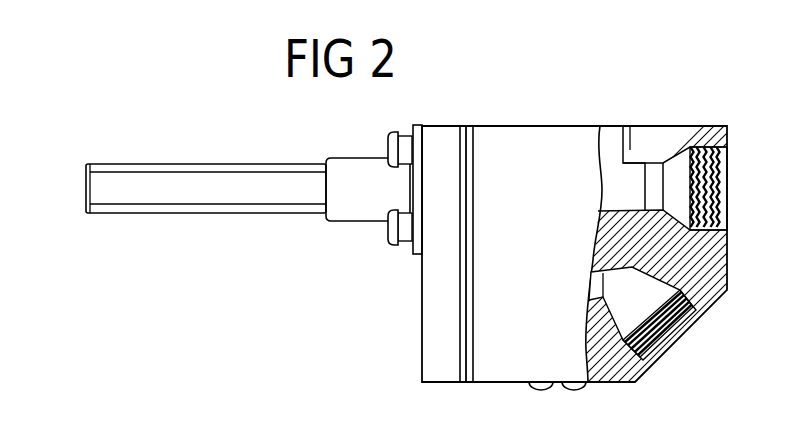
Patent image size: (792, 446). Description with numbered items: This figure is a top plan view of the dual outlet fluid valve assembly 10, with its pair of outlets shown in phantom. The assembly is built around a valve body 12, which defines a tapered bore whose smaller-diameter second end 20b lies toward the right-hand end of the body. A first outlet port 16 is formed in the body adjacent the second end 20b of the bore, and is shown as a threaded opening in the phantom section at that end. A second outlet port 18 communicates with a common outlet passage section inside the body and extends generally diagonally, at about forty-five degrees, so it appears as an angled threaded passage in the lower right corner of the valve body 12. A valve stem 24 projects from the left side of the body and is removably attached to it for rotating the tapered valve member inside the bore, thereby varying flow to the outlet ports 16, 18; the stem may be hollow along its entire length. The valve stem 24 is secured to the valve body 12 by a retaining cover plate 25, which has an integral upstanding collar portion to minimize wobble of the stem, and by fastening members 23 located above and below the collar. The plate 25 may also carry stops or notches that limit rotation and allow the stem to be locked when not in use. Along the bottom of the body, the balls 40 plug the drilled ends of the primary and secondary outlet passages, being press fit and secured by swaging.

The dual outlet fluid valve assembly 10 is at (588, 72).
The valve body 12 is at (598, 137).
The first outlet port 16 is at (718, 178).
The second outlet port 18 is at (673, 333).
The second end of the bore 20b is at (658, 128).
The fastening members 23 is at (389, 233).
The valve stem 24 is at (271, 163).
The retaining cover plate 25 is at (375, 167).
The balls 40 is at (574, 389).